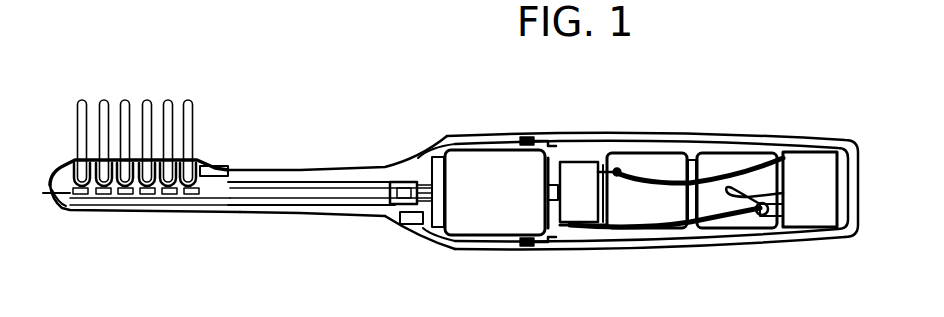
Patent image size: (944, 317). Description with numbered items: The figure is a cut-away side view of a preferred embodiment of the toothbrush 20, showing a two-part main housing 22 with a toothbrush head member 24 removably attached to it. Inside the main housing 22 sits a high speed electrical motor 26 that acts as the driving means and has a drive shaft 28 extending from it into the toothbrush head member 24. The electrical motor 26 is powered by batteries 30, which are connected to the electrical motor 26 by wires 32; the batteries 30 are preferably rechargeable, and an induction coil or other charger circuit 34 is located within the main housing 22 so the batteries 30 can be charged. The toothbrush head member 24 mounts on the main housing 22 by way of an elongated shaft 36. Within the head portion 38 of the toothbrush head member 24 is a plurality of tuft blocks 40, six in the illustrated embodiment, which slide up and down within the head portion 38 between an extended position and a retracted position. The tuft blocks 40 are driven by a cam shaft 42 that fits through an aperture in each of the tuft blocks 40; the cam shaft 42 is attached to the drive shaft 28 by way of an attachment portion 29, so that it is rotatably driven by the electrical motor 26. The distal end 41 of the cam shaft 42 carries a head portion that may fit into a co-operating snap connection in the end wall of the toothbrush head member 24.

The toothbrush 20 is at (718, 82).
The main housing 22 is at (583, 133).
The toothbrush head member 24 is at (240, 111).
The high speed electrical motor 26 is at (482, 208).
The drive shaft 28 is at (423, 170).
The attachment portion 29 is at (405, 168).
The batteries 30 is at (643, 205).
The wires 32 is at (645, 177).
The charger circuit 34 is at (818, 182).
The elongated shaft 36 is at (317, 170).
The head portion 38 is at (145, 213).
The tuft blocks 40 is at (77, 175).
The distal end 41 is at (78, 210).
The cam shaft 42 is at (310, 193).